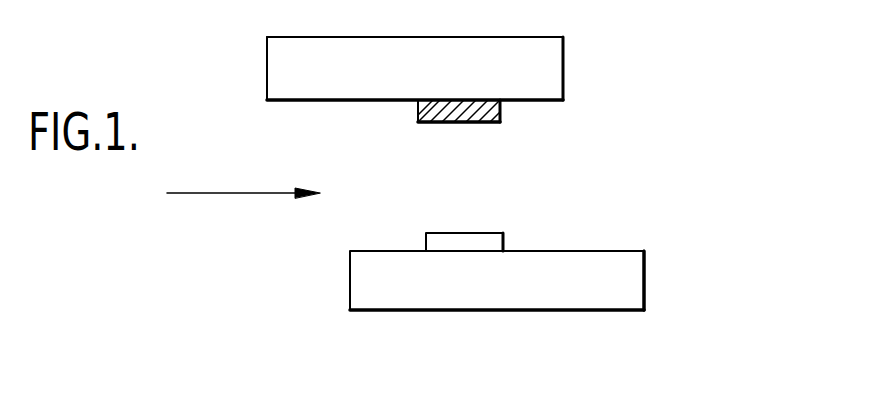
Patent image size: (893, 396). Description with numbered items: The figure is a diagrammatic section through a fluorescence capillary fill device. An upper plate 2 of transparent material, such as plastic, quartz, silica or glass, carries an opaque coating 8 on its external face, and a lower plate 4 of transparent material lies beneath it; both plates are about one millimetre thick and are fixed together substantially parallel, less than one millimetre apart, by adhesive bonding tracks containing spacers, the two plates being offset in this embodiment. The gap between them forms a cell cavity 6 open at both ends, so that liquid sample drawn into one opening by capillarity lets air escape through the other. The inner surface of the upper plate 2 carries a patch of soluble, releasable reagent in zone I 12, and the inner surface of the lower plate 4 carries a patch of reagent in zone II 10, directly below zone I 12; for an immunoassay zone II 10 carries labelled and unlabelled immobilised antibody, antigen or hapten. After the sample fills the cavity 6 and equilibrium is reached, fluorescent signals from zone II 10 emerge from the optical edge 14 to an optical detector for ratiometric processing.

The upper plate 2 is at (273, 73).
The lower plate 4 is at (365, 287).
The cell cavity 6 is at (427, 182).
The opaque coating 8 is at (537, 37).
The zone II 10 is at (467, 237).
The zone I 12 is at (459, 107).
The optical edge 14 is at (648, 283).